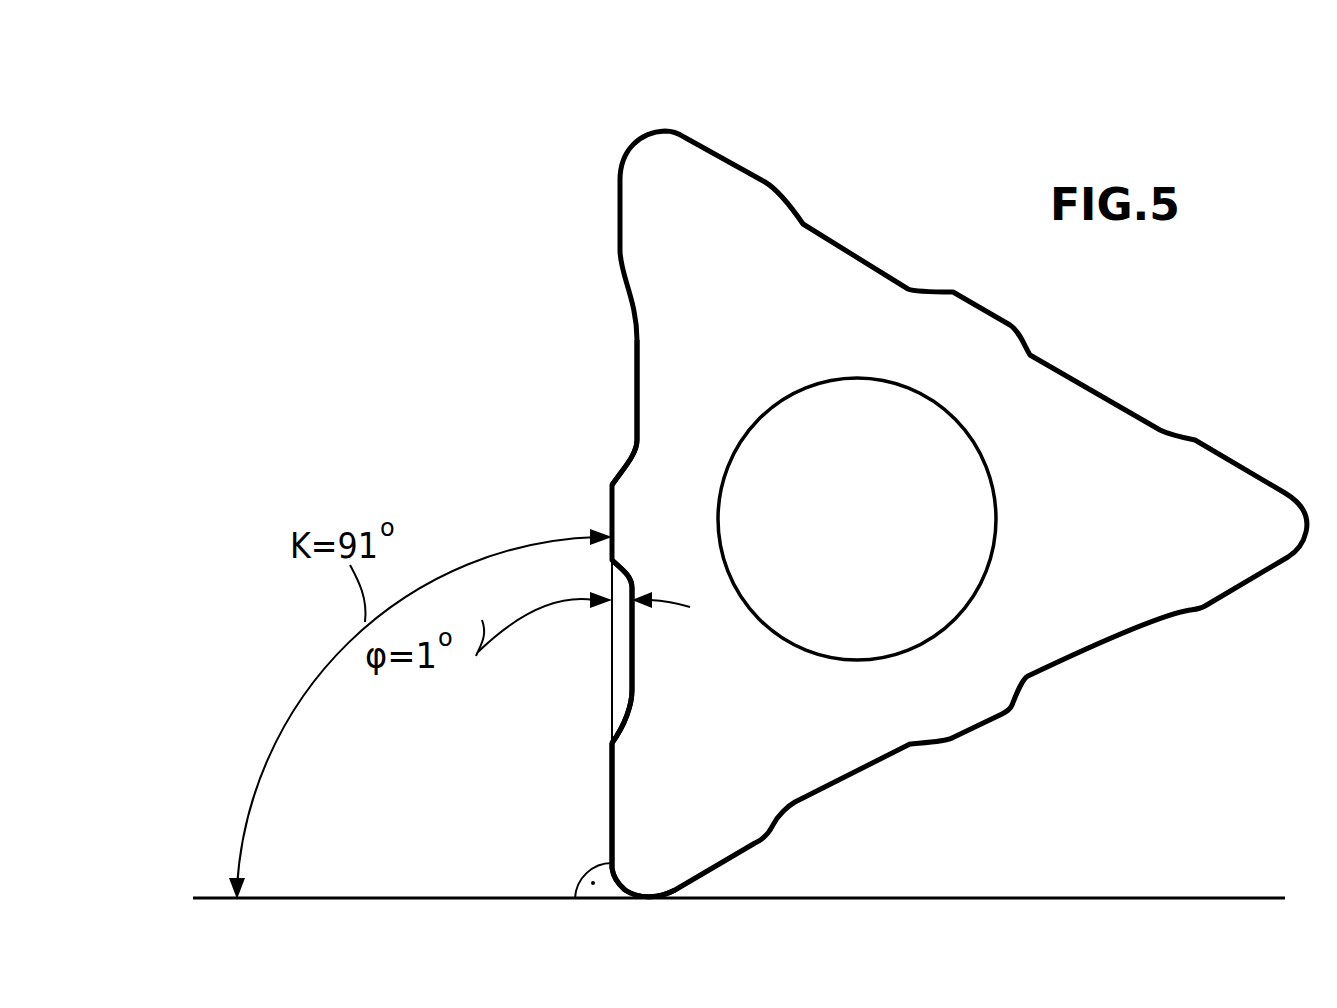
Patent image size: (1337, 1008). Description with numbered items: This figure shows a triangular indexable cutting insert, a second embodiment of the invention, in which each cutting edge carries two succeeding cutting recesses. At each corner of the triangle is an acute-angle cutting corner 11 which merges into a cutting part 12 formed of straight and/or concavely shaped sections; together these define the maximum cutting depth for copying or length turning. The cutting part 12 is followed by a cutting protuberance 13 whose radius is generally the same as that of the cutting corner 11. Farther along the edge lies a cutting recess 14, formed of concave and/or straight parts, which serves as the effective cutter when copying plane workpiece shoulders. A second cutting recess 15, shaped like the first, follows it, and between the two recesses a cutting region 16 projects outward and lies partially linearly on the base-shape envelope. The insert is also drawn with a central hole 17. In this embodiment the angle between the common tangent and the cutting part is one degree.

The cutting corner 11 is at (624, 114).
The cutting part 12 is at (610, 827).
The cutting protuberance 13 is at (610, 757).
The cutting recess 14 is at (630, 665).
The cutting recess 15 is at (637, 380).
The cutting region 16 is at (612, 505).
The central hole 17 is at (872, 512).